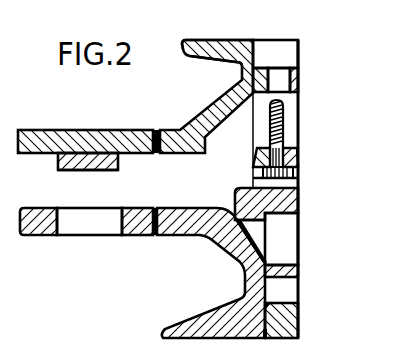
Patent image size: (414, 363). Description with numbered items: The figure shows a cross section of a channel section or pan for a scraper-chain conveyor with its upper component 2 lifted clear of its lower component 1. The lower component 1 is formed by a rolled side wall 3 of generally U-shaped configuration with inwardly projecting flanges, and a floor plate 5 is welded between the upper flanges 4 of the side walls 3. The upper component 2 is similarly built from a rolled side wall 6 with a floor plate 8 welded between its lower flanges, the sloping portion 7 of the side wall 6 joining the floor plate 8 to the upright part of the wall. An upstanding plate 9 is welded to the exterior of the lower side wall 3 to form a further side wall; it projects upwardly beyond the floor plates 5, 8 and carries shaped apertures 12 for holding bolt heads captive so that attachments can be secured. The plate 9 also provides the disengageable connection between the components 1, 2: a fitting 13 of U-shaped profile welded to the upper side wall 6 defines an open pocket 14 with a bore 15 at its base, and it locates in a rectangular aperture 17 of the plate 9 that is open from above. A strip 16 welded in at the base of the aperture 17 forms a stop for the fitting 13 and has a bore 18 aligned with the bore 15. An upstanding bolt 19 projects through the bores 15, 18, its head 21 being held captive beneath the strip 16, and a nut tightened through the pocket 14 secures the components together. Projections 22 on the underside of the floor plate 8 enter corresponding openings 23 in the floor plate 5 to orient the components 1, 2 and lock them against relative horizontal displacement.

The lower component 1 is at (96, 273).
The upper component 2 is at (50, 127).
The side wall 3 is at (242, 330).
The upper flange 4 is at (190, 228).
The floor plate 5 is at (30, 232).
The side wall 6 is at (232, 50).
The conical web 7 is at (183, 130).
The floor plate 8 is at (60, 142).
The upstanding plate 9 is at (299, 272).
The shaped aperture 12 is at (290, 244).
The fitting 13 is at (299, 75).
The pocket 14 is at (280, 50).
The bore 15 is at (284, 76).
The strip 16 is at (253, 160).
The rectangular aperture 17 is at (290, 125).
The bore 18 is at (300, 147).
The bolt 19 is at (282, 107).
The bolt head 21 is at (300, 173).
The projection 22 is at (62, 171).
The opening 23 is at (88, 227).